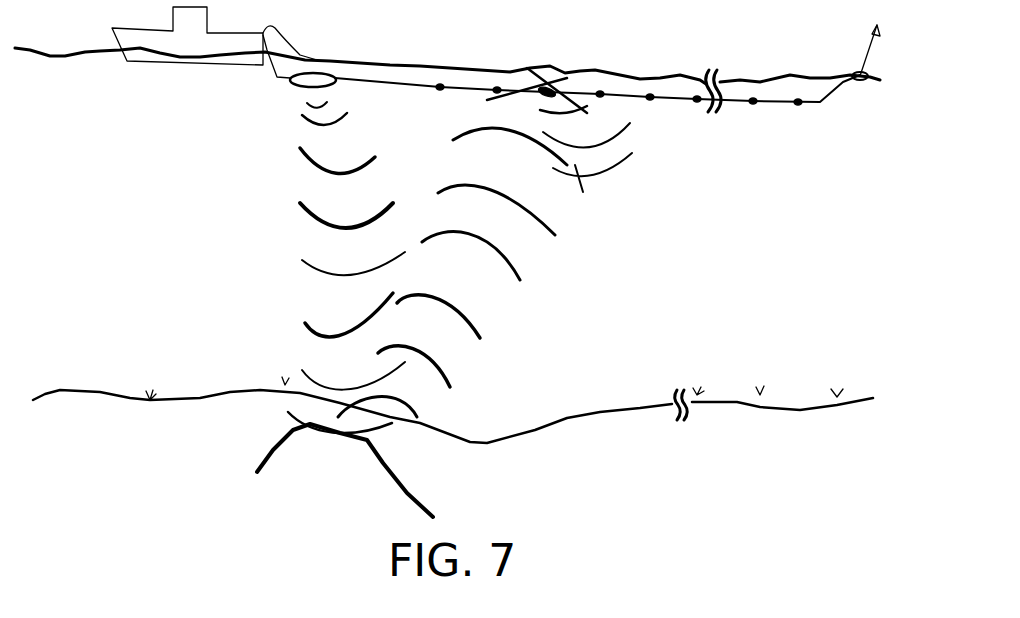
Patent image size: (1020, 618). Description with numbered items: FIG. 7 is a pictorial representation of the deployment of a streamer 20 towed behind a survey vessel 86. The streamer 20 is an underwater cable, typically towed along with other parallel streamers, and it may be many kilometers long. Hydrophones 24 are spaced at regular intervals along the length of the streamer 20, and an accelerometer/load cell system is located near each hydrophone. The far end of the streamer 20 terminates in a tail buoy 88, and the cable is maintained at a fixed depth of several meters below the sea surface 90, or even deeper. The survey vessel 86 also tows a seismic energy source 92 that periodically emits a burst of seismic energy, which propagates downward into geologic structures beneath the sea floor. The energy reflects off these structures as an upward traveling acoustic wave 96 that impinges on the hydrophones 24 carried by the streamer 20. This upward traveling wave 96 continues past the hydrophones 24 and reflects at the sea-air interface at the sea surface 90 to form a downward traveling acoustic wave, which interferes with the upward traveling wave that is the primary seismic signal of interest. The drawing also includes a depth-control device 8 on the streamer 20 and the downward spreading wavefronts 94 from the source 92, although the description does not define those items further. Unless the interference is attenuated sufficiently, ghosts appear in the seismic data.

The survey vessel 86 is at (130, 33).
The sea surface 90 is at (403, 62).
The seismic energy source 92 is at (300, 88).
The hydrophones 24 is at (445, 80).
The streamer 20 is at (680, 100).
The depth controller 8 is at (540, 95).
The tail buoy 88 is at (867, 77).
The source wavefronts 94 is at (308, 218).
The upward traveling acoustic wave 96 is at (520, 280).